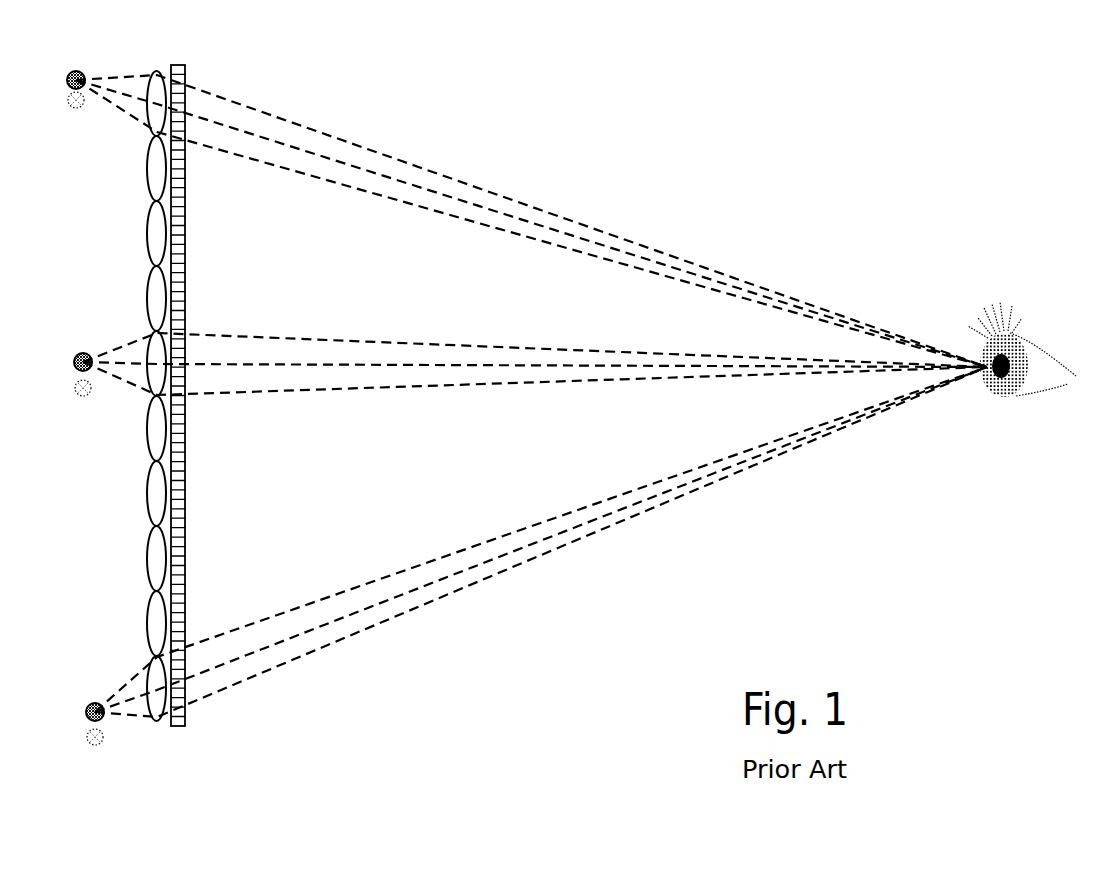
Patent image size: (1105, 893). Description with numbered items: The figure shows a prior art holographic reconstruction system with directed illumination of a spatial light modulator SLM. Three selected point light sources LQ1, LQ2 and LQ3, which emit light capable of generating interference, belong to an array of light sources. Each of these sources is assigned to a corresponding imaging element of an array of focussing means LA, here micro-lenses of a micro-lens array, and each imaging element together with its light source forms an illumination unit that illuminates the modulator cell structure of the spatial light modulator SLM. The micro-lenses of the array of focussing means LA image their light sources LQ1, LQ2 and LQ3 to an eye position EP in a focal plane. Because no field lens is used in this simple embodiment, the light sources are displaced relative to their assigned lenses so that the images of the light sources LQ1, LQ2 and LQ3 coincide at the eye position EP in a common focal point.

The point light source LQ1 is at (517, 207).
The point light source LQ2 is at (516, 356).
The point light source LQ3 is at (523, 556).
The spatial light modulator SLM is at (193, 387).
The array of focussing means LA is at (159, 413).
The eye position EP is at (1022, 368).